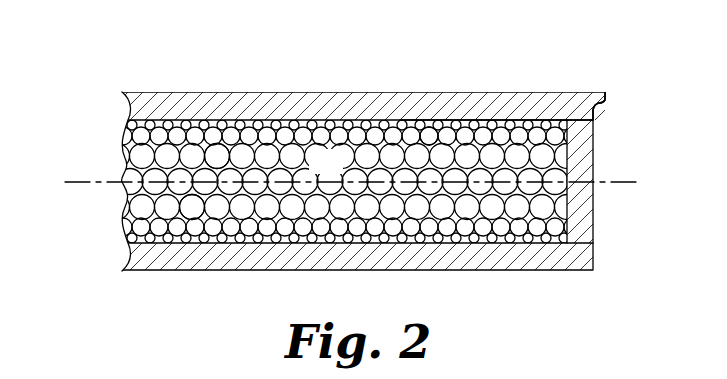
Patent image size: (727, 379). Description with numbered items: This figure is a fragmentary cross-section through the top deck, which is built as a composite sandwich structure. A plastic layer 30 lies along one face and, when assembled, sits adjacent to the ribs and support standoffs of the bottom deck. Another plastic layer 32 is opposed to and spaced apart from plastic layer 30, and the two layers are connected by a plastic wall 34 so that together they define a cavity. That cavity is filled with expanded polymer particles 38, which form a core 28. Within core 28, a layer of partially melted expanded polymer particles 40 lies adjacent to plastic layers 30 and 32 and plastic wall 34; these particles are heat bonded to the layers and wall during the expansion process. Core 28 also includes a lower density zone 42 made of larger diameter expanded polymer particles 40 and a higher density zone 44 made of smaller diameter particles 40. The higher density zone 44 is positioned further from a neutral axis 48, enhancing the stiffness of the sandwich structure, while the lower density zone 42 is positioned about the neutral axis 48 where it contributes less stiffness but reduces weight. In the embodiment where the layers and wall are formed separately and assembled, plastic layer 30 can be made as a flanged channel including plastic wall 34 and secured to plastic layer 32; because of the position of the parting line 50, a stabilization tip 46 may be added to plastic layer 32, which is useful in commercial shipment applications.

The core 28 is at (412, 196).
The plastic layer 30 is at (485, 272).
The plastic layer 32 is at (485, 92).
The plastic wall 34 is at (593, 157).
The expanded polymer particles 38 is at (432, 135).
The partially melted expanded polymer particles 40 is at (530, 120).
The lower density zone 42 is at (217, 160).
The higher density zone 44 is at (190, 205).
The stabilization tip 46 is at (603, 97).
The neutral axis 48 is at (80, 182).
The parting line 50 is at (593, 118).